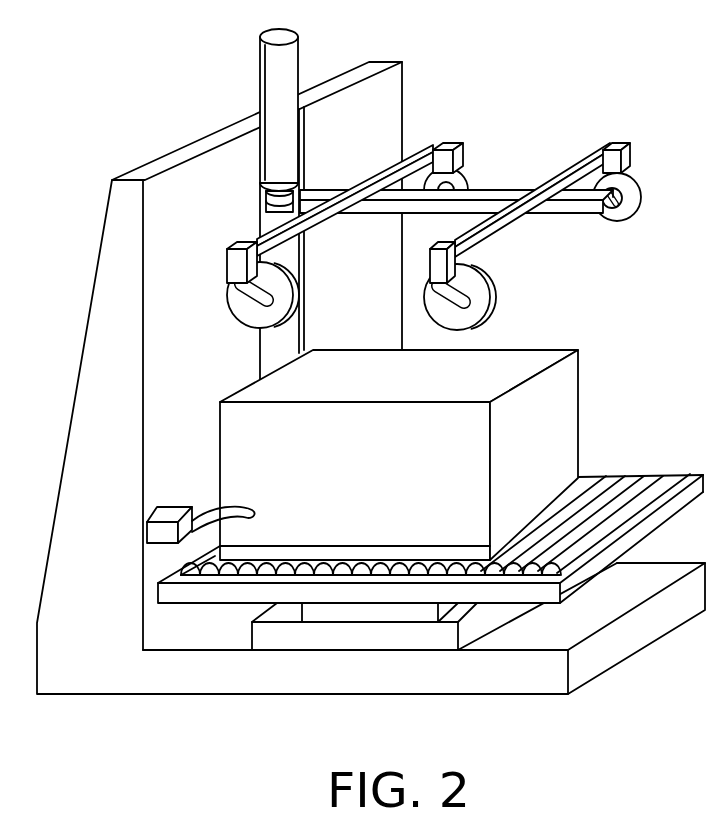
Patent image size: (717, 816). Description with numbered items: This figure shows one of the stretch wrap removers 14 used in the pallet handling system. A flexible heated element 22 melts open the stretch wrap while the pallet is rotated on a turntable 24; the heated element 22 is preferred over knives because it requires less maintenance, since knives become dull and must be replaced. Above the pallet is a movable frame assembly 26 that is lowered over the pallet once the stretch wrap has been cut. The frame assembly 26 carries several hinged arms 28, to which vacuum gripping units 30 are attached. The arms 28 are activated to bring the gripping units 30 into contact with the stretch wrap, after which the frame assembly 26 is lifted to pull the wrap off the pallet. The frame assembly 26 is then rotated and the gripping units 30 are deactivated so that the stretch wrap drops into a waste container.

The stretch wrap remover 14 is at (452, 52).
The flexible heated element 22 is at (184, 544).
The turntable 24 is at (374, 614).
The movable frame assembly 26 is at (641, 172).
The hinged arms 28 is at (432, 148).
The vacuum gripping units 30 is at (532, 194).